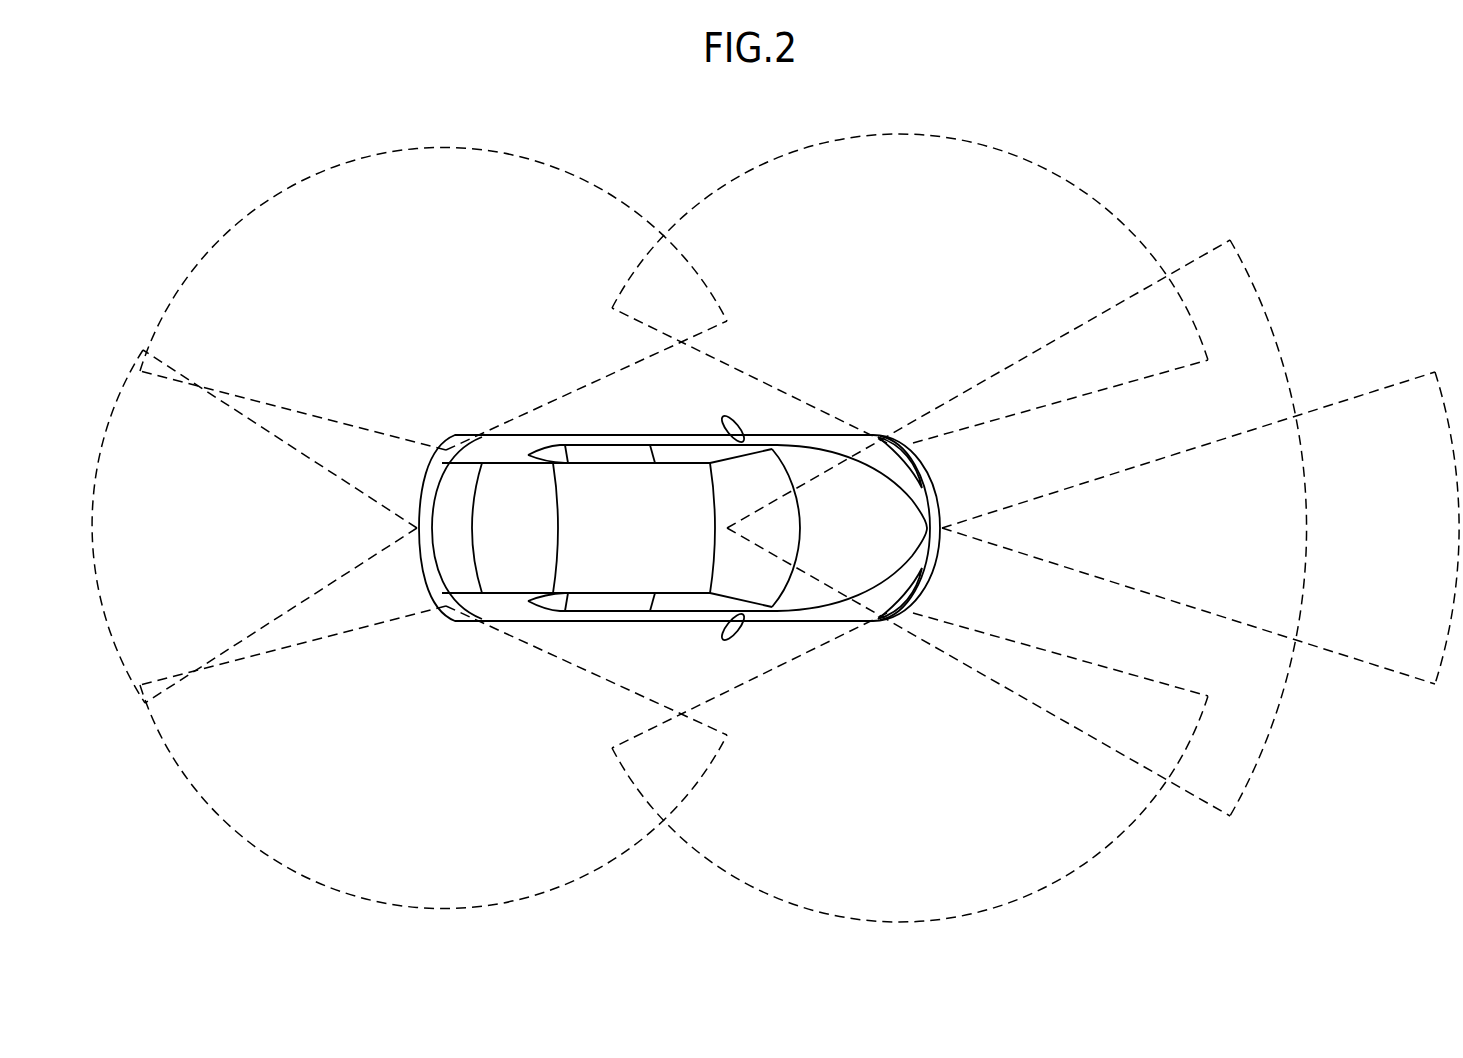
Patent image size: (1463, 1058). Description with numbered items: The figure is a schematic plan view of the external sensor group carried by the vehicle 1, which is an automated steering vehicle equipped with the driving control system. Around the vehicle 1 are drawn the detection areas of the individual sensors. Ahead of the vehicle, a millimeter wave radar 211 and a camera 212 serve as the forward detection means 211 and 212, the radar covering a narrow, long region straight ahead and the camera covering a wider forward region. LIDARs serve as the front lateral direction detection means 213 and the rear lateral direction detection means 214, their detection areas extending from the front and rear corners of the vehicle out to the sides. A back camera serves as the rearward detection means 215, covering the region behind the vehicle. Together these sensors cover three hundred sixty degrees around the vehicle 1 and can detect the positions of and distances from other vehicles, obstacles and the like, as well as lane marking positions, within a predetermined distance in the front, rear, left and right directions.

The vehicle 1 is at (642, 505).
The millimeter wave radar 211 is at (1395, 384).
The camera 212 is at (1262, 300).
The front lateral direction detection means 213 is at (1077, 188).
The rear lateral direction detection means 214 is at (256, 209).
The rearward detection means 215 is at (132, 371).